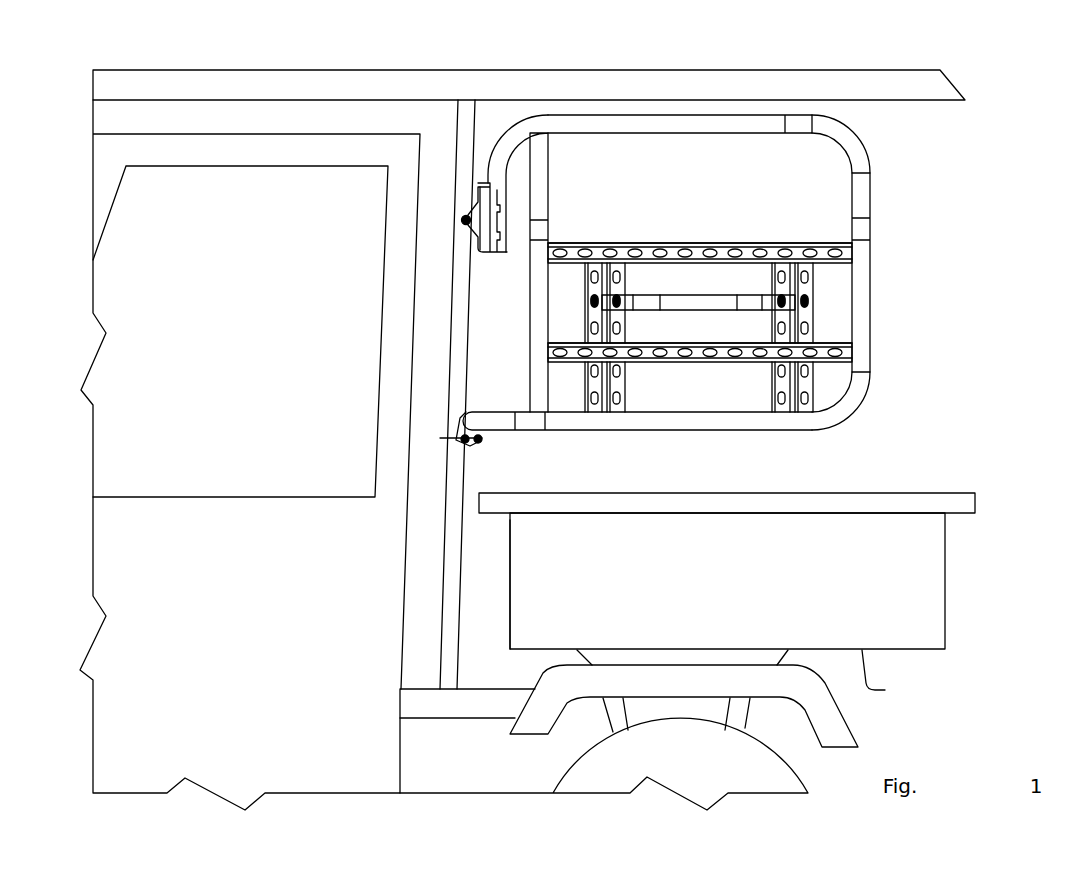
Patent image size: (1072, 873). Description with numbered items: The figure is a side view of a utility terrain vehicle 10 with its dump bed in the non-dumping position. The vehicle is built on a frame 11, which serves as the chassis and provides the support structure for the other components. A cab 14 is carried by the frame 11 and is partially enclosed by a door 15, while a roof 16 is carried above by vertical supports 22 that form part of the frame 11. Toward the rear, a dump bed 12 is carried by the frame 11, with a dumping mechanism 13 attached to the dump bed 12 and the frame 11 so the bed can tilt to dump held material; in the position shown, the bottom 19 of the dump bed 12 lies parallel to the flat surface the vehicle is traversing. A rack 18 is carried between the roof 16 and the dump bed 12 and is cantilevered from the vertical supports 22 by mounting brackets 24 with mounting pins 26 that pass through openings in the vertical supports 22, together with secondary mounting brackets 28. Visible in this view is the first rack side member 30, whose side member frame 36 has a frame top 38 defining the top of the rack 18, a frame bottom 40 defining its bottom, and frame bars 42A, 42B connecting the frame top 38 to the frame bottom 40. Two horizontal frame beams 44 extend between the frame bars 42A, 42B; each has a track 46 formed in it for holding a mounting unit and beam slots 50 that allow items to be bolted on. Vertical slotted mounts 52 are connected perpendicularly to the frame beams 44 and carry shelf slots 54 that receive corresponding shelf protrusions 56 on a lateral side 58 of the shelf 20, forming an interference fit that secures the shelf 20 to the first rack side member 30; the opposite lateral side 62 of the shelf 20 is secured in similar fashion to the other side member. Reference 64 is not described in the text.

The utility terrain vehicle 10 is at (763, 560).
The frame 11 is at (478, 708).
The dump bed 12 is at (977, 491).
The dumping mechanism 13 is at (755, 714).
The cab 14 is at (248, 166).
The door 15 is at (247, 645).
The roof 16 is at (412, 77).
The rack 18 is at (652, 296).
The bottom of the dump bed 19 is at (867, 672).
The shelf 20 is at (697, 307).
The vertical supports 22 is at (468, 358).
The mounting brackets 24 is at (485, 252).
The mounting pins 26 is at (460, 222).
The secondary mounting brackets 28 is at (480, 440).
The first rack side member 30 is at (865, 146).
The side member frame 36 is at (866, 272).
The frame top 38 is at (738, 130).
The frame bottom 40 is at (760, 432).
The frame bar 42A is at (543, 186).
The frame bar 42B is at (870, 224).
The frame beams 44 is at (700, 291).
The track 46 is at (773, 253).
The beam slots 50 is at (762, 247).
The slotted mounts 52 is at (584, 378).
The shelf slots 54 is at (617, 300).
The shelf protrusions 56 is at (617, 306).
The lateral side of the shelf 58 is at (672, 310).
The opposite lateral side of the shelf 62 is at (945, 575).
The box side wall 64 is at (510, 565).